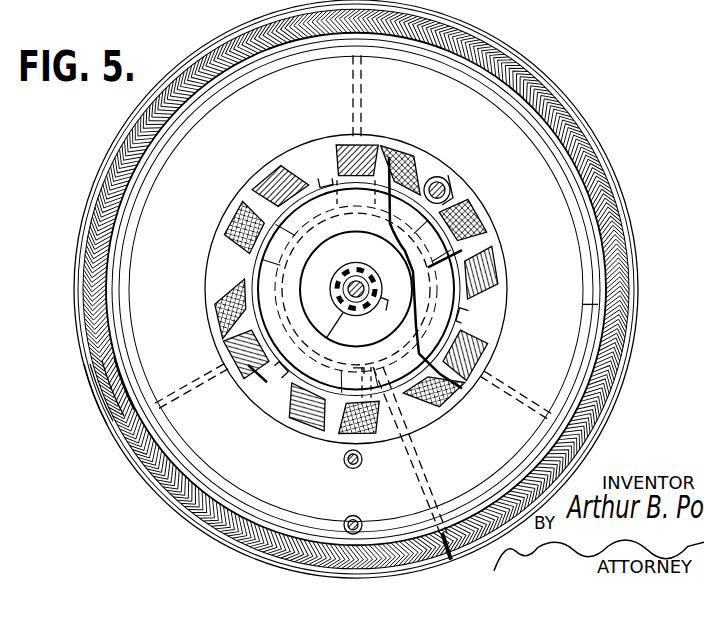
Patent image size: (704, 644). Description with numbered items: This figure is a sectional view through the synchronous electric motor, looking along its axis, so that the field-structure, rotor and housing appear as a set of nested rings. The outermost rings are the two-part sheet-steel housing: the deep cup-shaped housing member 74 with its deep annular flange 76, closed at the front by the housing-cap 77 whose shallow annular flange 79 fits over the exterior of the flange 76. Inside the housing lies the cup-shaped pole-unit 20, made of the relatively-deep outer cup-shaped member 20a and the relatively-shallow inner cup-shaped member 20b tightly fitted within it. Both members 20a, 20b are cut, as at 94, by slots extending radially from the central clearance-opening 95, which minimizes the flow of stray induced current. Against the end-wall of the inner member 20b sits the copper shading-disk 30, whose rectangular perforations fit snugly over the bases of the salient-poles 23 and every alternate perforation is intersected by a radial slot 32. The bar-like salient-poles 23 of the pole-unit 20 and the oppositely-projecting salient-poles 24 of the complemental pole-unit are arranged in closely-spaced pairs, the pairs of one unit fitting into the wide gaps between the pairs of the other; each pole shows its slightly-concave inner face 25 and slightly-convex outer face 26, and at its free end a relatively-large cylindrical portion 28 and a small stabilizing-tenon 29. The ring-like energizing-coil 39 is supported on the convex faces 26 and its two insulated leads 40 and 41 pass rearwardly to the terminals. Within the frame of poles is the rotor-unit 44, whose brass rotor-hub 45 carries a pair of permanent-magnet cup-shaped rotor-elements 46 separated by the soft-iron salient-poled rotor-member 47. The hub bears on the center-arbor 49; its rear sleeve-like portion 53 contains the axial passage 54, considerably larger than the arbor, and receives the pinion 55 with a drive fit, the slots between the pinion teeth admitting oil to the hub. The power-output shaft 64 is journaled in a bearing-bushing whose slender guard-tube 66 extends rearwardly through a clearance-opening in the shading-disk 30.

The cup-shaped pole-unit 20 is at (580, 155).
The outer cup-shaped member 20a is at (603, 185).
The inner cup-shaped member 20b is at (600, 204).
The salient-poles 23 is at (336, 164).
The salient-poles 24 is at (478, 216).
The concave inner face 25 is at (322, 202).
The convex outer face 26 is at (258, 180).
The cylindrical portion 28 is at (412, 164).
The stabilizing-tenon 29 is at (400, 152).
The shading-disk 30 is at (598, 305).
The radial slot 32 is at (364, 78).
The energizing-coil 39 is at (580, 280).
The insulated lead 40 is at (344, 455).
The insulated lead 41 is at (344, 515).
The rotor-unit 44 is at (356, 287).
The rotor-hub 45 is at (356, 220).
The cup-shaped rotor-elements 46 is at (417, 322).
The salient-poled rotor-member 47 is at (426, 234).
The center-arbor 49 is at (354, 314).
The sleeve-like portion 53 is at (378, 304).
The axial passage 54 is at (340, 306).
The pinion 55 is at (372, 268).
The power-output shaft 64 is at (455, 201).
The guard-tube 66 is at (446, 184).
The cup-shaped housing member 74 is at (92, 373).
The annular flange 76 is at (98, 397).
The housing-cap 77 is at (110, 437).
The annular flange 79 is at (126, 462).
The slots 94 is at (425, 486).
The central clearance-opening 95 is at (352, 382).